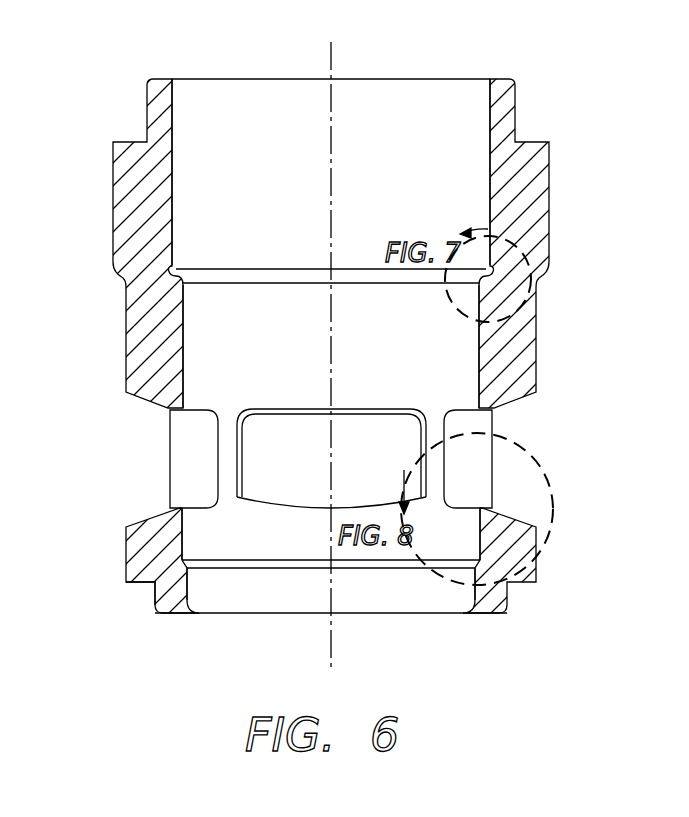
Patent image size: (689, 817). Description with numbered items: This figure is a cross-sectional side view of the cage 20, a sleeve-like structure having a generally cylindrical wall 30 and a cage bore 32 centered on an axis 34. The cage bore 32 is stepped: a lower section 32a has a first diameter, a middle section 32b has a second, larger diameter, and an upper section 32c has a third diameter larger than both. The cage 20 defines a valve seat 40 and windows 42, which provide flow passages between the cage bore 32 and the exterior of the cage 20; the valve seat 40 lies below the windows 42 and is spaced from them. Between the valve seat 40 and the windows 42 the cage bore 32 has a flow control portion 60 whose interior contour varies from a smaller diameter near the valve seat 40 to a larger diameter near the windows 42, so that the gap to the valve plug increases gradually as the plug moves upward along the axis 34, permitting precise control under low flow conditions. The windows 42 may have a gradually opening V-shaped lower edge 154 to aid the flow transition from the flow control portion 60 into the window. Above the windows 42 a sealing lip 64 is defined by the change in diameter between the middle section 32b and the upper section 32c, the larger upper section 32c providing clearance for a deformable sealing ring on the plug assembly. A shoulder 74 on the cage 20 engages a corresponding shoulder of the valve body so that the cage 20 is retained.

The cage 20 is at (127, 563).
The cylindrical wall 30 is at (112, 230).
The cage bore 32 is at (402, 596).
The lower section 32a is at (485, 585).
The middle section 32b is at (480, 340).
The upper section 32c is at (490, 183).
The axis 34 is at (332, 356).
The valve seat 40 is at (283, 567).
The windows 42 is at (357, 420).
The flow control portion 60 is at (183, 540).
The sealing lip 64 is at (181, 268).
The shoulder 74 is at (142, 583).
The V-shaped lower edge 154 is at (293, 503).